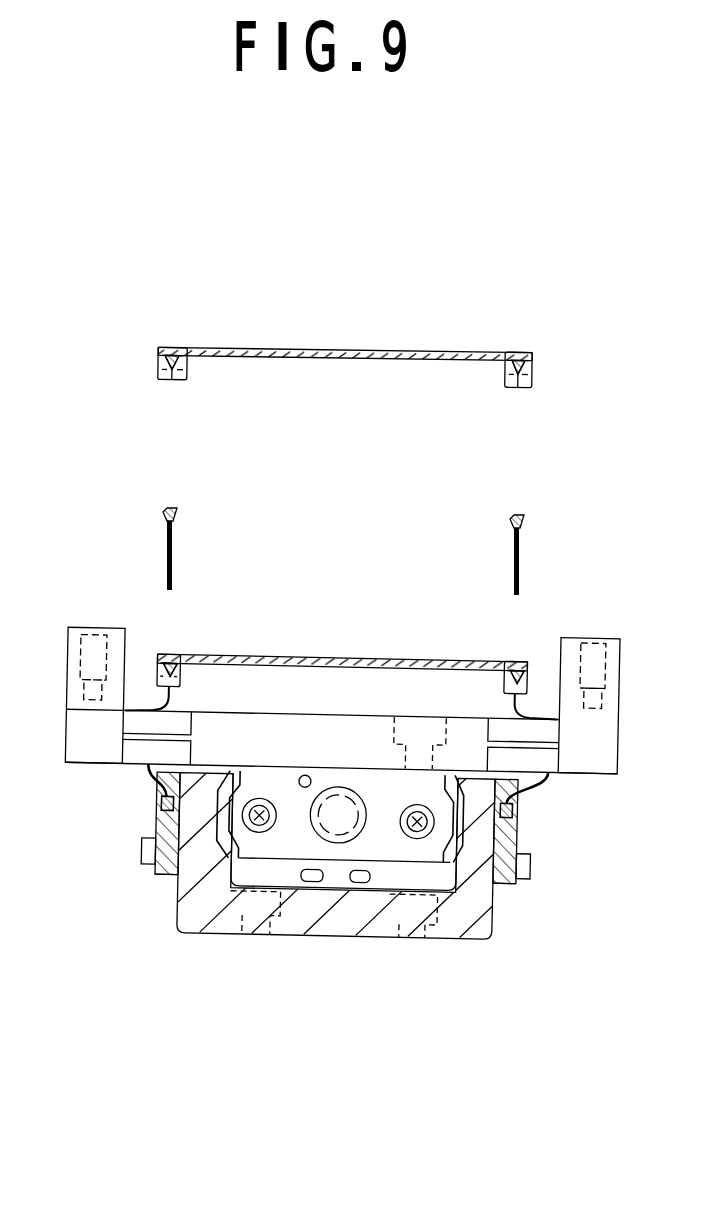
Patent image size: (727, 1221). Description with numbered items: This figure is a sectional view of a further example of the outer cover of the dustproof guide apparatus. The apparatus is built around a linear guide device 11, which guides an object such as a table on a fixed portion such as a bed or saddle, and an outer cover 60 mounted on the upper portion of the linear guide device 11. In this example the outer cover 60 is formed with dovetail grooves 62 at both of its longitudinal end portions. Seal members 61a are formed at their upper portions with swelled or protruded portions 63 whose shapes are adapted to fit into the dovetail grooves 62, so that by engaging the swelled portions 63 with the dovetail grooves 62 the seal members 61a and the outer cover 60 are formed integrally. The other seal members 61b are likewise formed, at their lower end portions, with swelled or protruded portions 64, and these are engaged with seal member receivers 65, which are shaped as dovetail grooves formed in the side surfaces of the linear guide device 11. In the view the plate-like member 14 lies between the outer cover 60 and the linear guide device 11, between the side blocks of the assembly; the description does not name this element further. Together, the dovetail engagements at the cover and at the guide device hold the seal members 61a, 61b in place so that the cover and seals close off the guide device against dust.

The linear guide device 11 is at (314, 943).
The printed circuit board 14 is at (318, 714).
The outer cover 60 is at (370, 340).
The seal member 61a is at (172, 567).
The seal member 61b is at (155, 782).
The dovetail groove 62 is at (173, 383).
The swelled portion 63 is at (175, 511).
The swelled portion 64 is at (157, 815).
The seal member receiver 65 is at (165, 878).